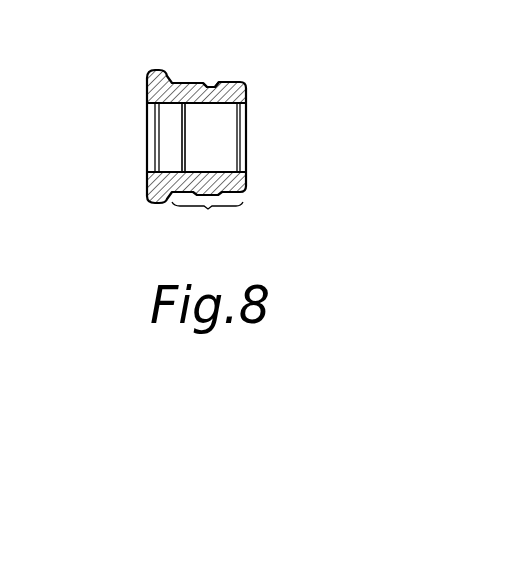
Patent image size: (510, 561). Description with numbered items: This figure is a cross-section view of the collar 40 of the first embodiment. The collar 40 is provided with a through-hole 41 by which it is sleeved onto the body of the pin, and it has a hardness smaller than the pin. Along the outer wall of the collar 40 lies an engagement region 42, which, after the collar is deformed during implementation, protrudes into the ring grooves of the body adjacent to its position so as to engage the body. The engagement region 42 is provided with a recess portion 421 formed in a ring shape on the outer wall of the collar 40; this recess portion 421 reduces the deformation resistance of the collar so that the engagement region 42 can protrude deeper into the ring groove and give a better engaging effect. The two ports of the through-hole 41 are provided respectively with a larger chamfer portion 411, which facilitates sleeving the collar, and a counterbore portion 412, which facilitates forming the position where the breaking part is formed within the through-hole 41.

The collar 40 is at (273, 82).
The through-hole 41 is at (222, 170).
The engagement region 42 is at (207, 220).
The chamfer portion 411 is at (148, 98).
The counterbore portion 412 is at (247, 109).
The recess portion 421 is at (207, 83).